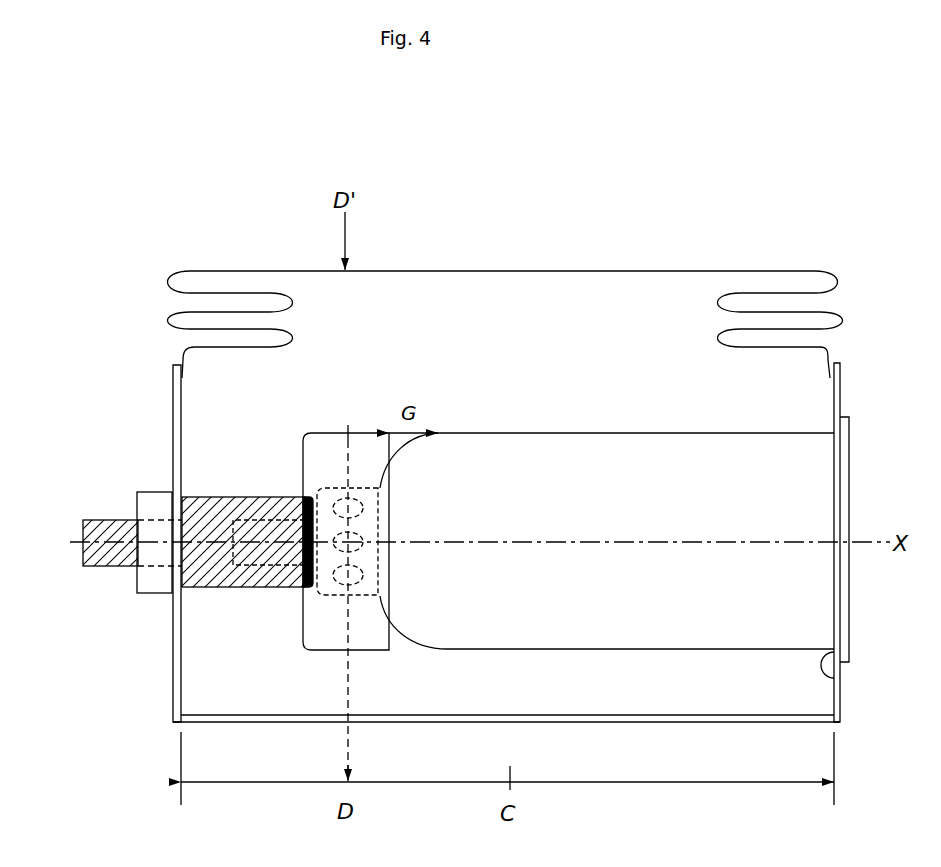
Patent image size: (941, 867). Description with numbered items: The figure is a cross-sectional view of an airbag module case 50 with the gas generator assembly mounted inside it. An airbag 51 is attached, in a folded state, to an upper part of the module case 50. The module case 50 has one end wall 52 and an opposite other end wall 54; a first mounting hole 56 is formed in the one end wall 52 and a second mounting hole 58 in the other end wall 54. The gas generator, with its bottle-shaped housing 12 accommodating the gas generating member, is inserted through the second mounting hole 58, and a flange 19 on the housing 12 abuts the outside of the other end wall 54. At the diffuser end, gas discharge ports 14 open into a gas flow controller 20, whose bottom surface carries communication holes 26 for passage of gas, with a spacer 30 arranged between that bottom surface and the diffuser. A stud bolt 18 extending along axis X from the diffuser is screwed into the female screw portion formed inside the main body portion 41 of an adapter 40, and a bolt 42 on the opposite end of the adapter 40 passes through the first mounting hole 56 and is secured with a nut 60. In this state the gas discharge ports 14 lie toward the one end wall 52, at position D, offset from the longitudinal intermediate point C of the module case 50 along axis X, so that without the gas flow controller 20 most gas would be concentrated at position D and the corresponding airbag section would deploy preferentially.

The housing 12 is at (585, 432).
The gas discharge ports 14 is at (360, 575).
The stud bolt 18 is at (265, 528).
The flange 19 is at (849, 468).
The gas flow controller 20 is at (360, 651).
The communication holes 26 is at (303, 640).
The spacer 30 is at (306, 495).
The adapter 40 is at (203, 588).
The main body portion 41 is at (215, 497).
The bolt 42 is at (105, 525).
The module case 50 is at (514, 573).
The airbag 51 is at (838, 280).
The one end wall 52 is at (173, 400).
The other end wall 54 is at (840, 378).
The first mounting hole 56 is at (182, 528).
The second mounting hole 58 is at (836, 665).
The nut 60 is at (156, 594).